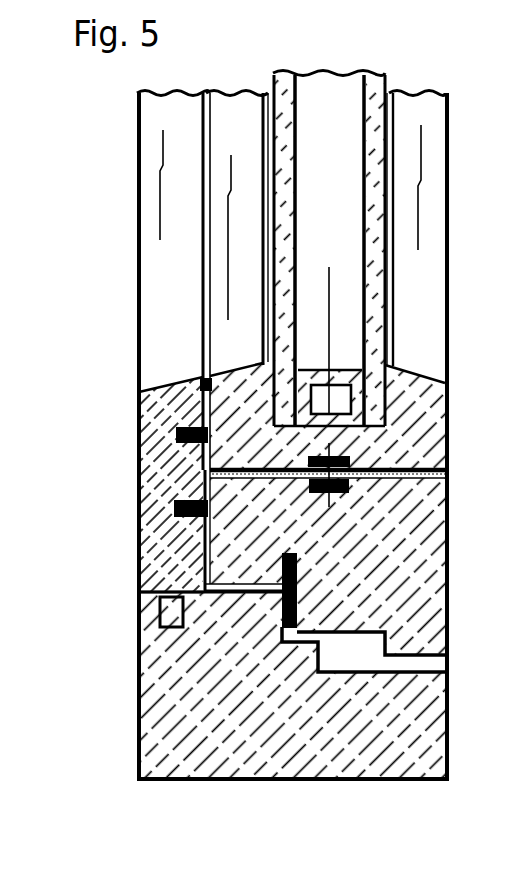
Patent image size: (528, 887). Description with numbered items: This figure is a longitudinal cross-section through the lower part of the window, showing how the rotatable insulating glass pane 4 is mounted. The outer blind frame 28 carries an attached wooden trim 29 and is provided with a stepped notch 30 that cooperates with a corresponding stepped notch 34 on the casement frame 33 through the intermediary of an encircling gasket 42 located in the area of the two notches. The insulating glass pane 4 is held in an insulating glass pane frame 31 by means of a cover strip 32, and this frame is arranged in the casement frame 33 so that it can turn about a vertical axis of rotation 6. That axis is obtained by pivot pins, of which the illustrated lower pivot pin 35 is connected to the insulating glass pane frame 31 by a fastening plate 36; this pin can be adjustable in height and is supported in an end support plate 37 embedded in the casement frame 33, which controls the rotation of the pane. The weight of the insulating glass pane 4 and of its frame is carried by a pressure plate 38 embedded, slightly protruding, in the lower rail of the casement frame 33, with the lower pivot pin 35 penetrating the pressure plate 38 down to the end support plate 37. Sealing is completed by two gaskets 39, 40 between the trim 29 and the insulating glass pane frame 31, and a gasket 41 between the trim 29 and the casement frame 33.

The insulating glass pane 4 is at (380, 196).
The vertical axis of rotation 6 is at (329, 308).
The blind frame 28 is at (233, 710).
The wooden trim 29 is at (163, 477).
The stepped notch 30 is at (303, 636).
The insulating glass pane frame 31 is at (243, 387).
The cover strip 32 is at (398, 425).
The casement frame 33 is at (407, 585).
The stepped notch 34 is at (225, 588).
The pivot pin 35 is at (350, 462).
The fastening plate 36 is at (340, 446).
The end support plate 37 is at (350, 496).
The pressure plate 38 is at (372, 471).
The gasket 39 is at (180, 434).
The gasket 40 is at (205, 382).
The gasket 41 is at (180, 510).
The gasket 42 is at (282, 620).